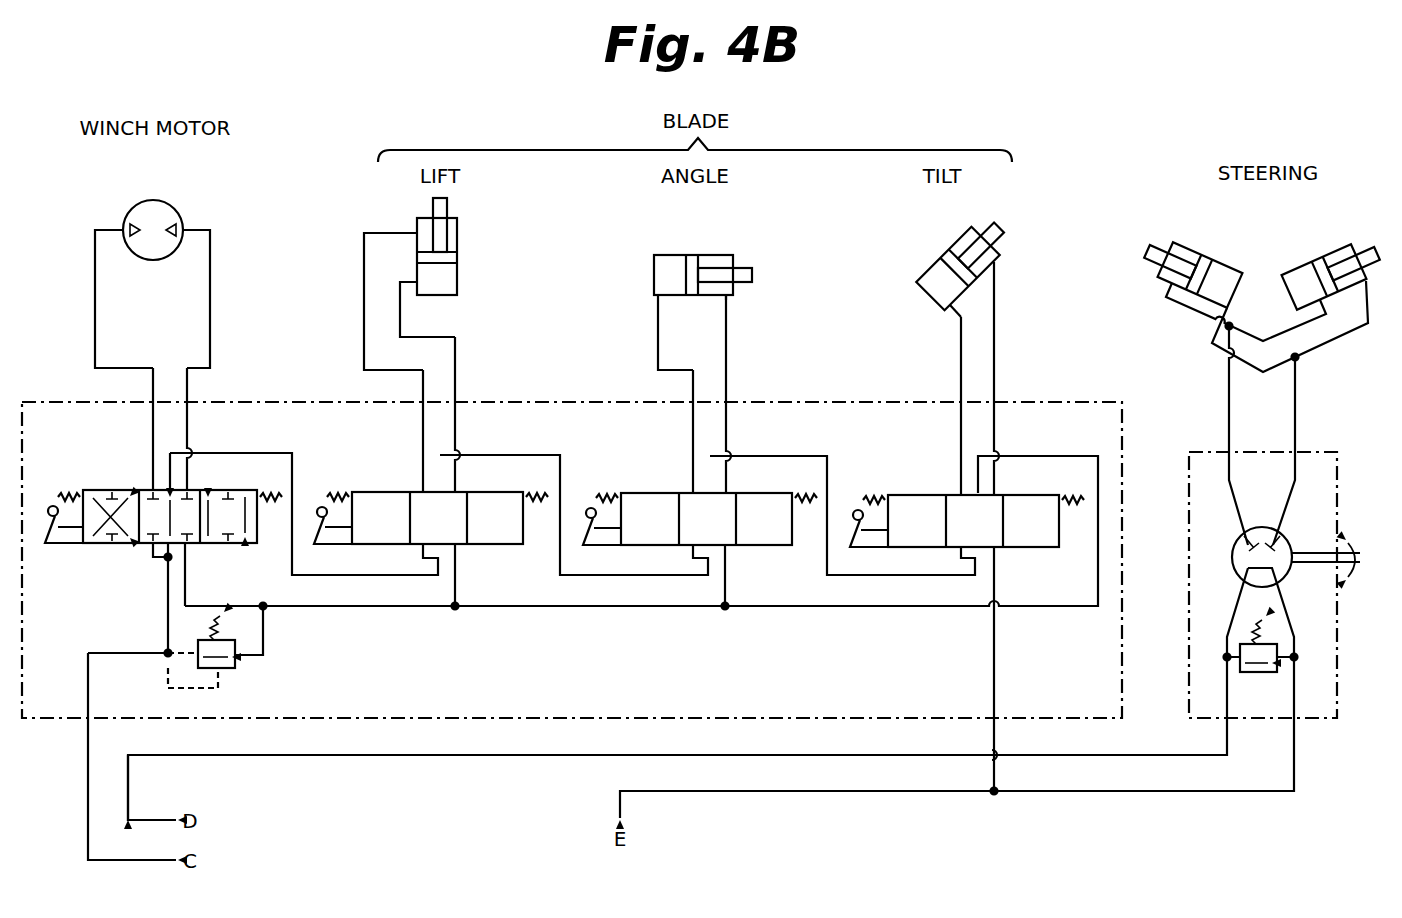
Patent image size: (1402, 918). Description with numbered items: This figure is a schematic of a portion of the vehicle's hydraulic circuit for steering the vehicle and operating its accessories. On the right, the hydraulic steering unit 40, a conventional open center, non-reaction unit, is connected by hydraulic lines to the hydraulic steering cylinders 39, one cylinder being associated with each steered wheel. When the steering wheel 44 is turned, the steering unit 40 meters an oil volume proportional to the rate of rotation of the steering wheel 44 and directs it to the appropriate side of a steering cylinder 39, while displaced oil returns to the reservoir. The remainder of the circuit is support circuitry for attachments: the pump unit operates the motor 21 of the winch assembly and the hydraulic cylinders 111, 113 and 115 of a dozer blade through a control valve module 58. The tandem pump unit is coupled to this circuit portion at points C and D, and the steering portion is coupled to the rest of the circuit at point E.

The motor 21 is at (153, 200).
The hydraulic steering cylinders 39 is at (1225, 264).
The hydraulic steering unit 40 is at (1185, 450).
The steering wheel 44 is at (1362, 546).
The control valve module 58 is at (60, 722).
The hydraulic cylinder 111 is at (459, 232).
The hydraulic cylinder 113 is at (654, 268).
The hydraulic cylinder 115 is at (943, 257).